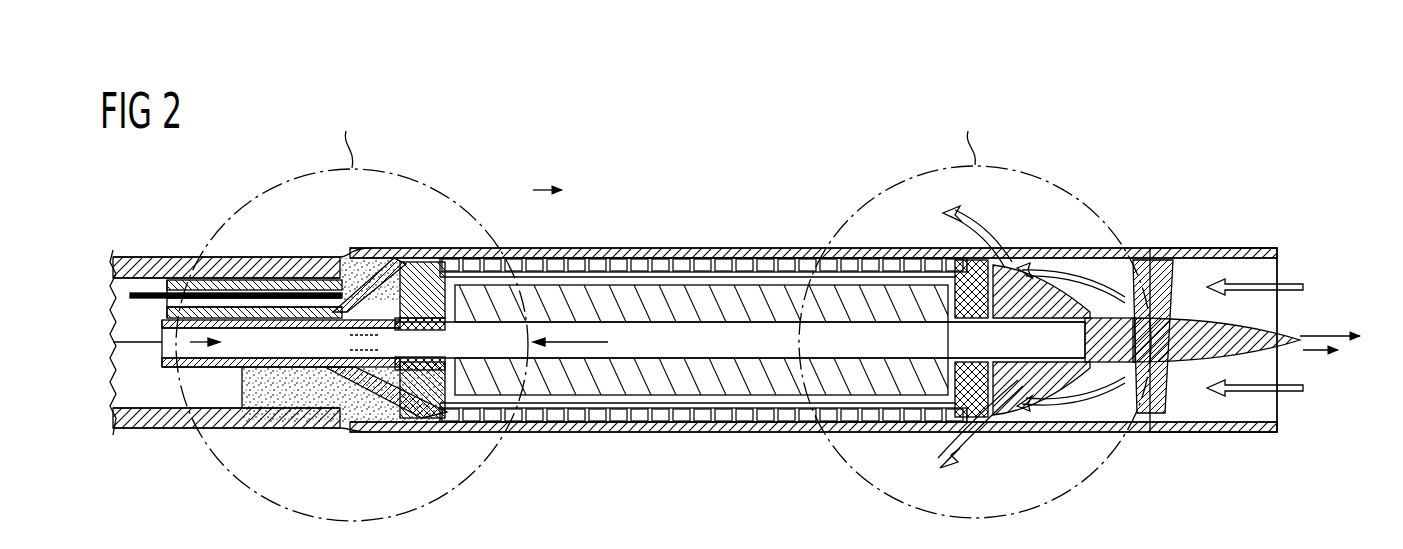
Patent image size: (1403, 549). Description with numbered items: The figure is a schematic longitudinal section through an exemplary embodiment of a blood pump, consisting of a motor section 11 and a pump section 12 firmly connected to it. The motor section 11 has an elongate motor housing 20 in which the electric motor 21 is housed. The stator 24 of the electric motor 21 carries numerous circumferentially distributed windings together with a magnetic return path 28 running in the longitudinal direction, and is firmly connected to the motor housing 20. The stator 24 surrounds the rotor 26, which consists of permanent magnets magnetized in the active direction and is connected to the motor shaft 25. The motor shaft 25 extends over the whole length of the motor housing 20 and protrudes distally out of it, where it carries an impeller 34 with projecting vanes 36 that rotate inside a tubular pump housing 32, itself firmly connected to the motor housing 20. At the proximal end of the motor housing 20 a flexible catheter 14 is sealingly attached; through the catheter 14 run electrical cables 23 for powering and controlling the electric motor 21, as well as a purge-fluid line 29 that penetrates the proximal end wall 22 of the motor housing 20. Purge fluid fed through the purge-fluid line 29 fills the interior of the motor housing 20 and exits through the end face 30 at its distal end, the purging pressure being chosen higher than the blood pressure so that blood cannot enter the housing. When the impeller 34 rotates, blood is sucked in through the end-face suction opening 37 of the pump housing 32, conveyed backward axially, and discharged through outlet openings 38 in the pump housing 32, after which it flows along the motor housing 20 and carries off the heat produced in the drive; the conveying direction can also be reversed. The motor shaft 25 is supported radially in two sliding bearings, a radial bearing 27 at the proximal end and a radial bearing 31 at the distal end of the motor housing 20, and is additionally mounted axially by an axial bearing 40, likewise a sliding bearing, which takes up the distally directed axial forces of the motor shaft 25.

The motor section 11 is at (620, 150).
The pump section 12 is at (1156, 208).
The flexible catheter 14 is at (163, 430).
The motor housing 20 is at (670, 243).
The electric motor 21 is at (808, 497).
The proximal end wall 22 is at (416, 431).
The electrical cables 23 is at (146, 263).
The stator 24 is at (736, 433).
The motor shaft 25 is at (588, 240).
The rotor 26 is at (691, 433).
The radial bearing 27 is at (390, 433).
The magnetic return path 28 is at (792, 433).
The purge-fluid line 29 is at (186, 347).
The end face 30 is at (973, 401).
The radial bearing 31 is at (975, 353).
The pump housing 32 is at (1225, 249).
The impeller 34 is at (1164, 420).
The vanes 36 is at (1204, 420).
The suction opening 37 is at (1282, 306).
The outlet openings 38 is at (1045, 260).
The axial bearing 40 is at (938, 257).